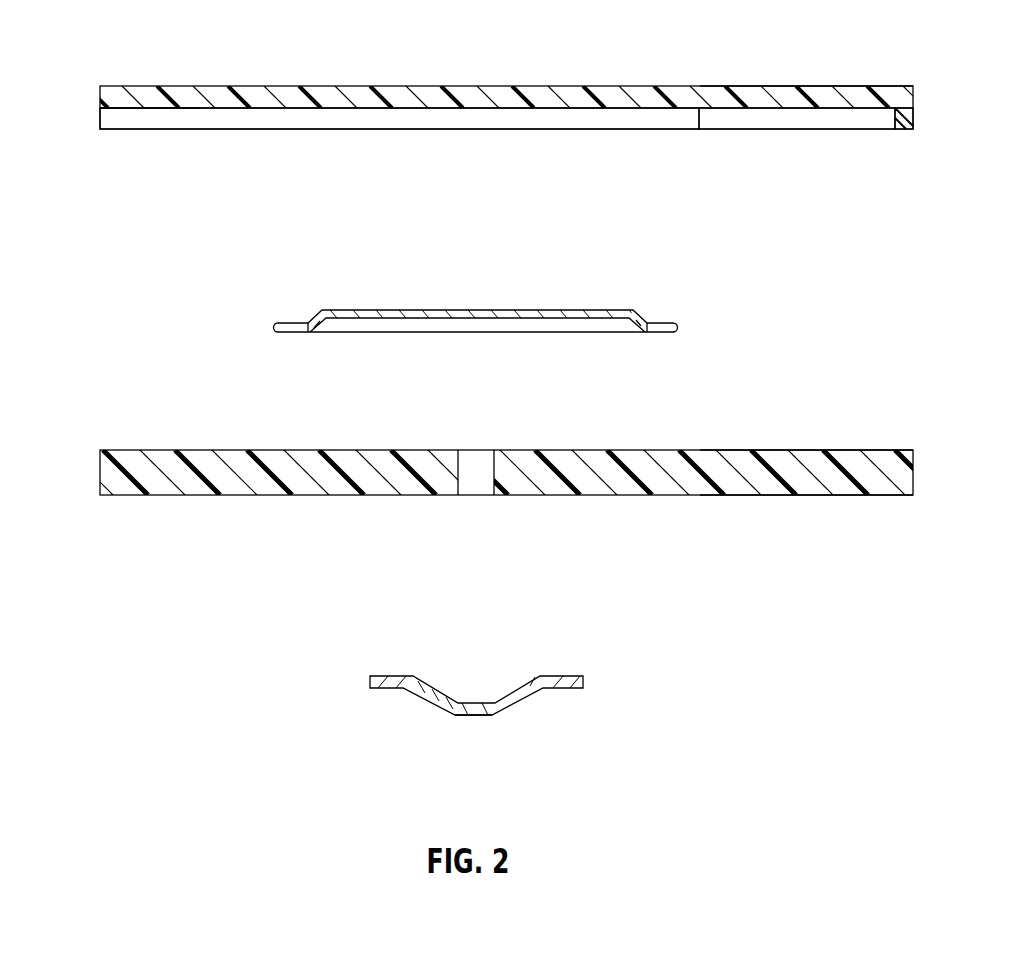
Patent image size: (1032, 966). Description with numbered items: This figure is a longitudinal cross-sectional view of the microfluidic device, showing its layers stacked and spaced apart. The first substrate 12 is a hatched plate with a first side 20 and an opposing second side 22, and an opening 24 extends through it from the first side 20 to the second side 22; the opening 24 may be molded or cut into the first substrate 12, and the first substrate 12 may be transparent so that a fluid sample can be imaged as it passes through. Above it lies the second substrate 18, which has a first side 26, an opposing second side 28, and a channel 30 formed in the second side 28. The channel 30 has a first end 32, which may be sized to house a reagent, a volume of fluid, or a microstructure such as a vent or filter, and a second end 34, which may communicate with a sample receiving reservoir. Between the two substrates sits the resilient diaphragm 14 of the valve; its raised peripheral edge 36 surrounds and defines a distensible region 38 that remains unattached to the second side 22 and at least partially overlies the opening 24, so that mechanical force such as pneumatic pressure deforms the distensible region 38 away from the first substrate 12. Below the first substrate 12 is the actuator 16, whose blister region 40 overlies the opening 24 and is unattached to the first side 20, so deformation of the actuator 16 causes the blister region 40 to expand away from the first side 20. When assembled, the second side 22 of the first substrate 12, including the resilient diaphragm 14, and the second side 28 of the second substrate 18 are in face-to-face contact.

The first substrate 12 is at (100, 472).
The resilient diaphragm 14 is at (300, 322).
The actuator 16 is at (387, 690).
The second substrate 18 is at (177, 86).
The first side 20 is at (865, 497).
The second side 22 is at (835, 450).
The opening 24 is at (470, 476).
The first side 26 is at (835, 86).
The second side 28 is at (785, 131).
The channel 30 is at (620, 112).
The first end 32 is at (893, 118).
The second end 34 is at (123, 110).
The raised peripheral edge 36 is at (660, 322).
The distensible region 38 is at (452, 308).
The blister region 40 is at (478, 717).